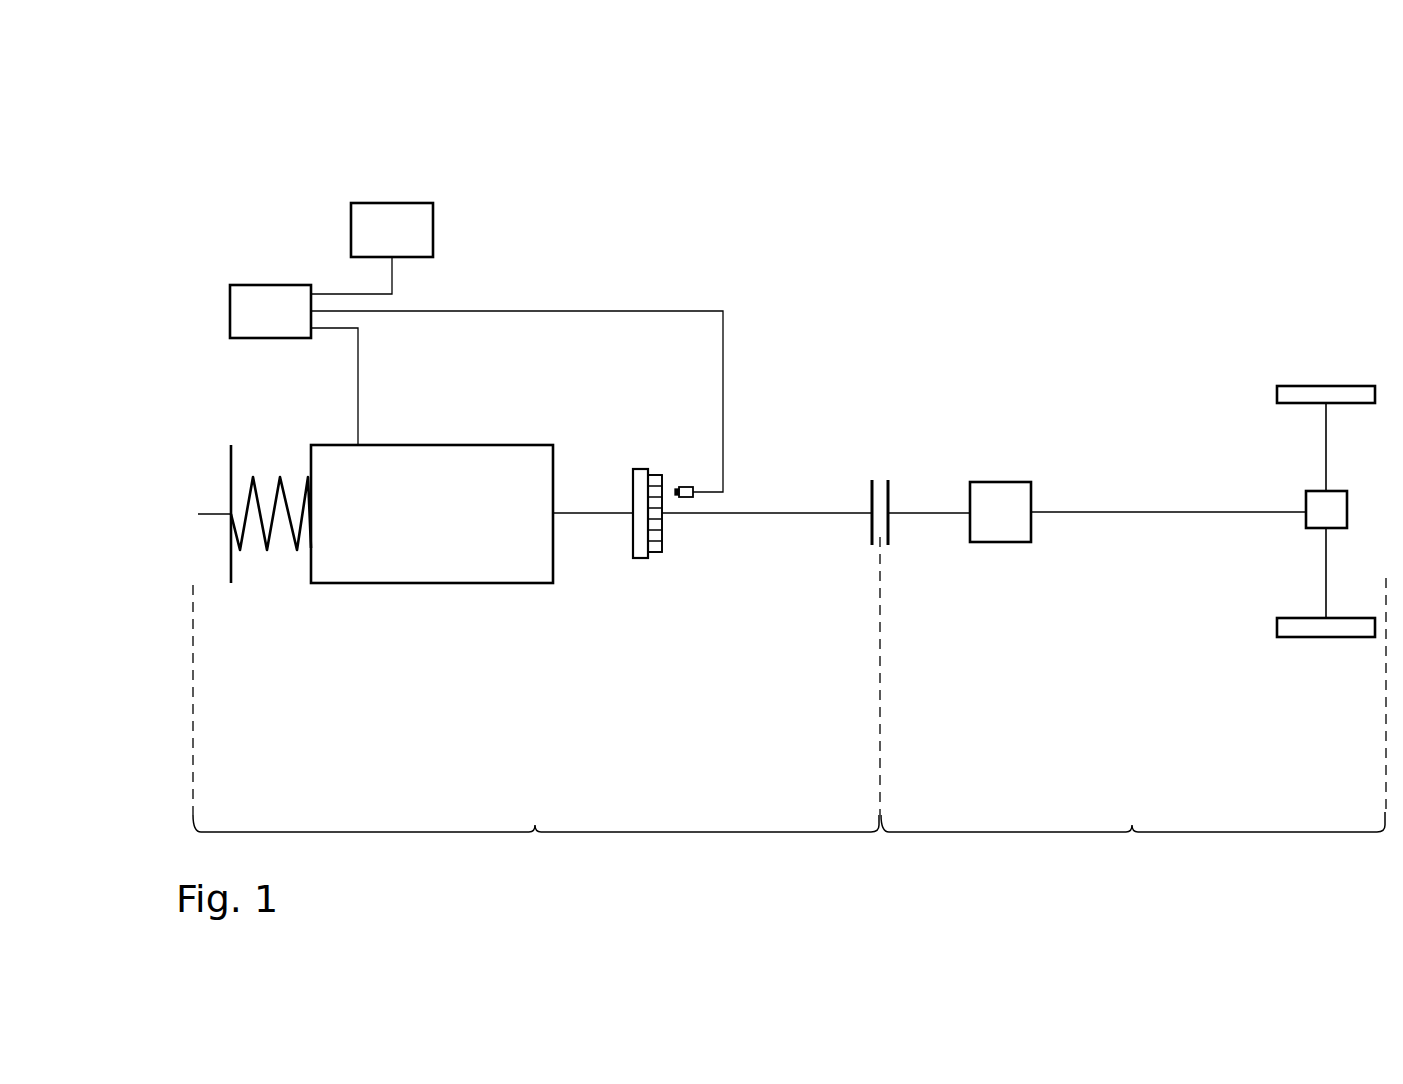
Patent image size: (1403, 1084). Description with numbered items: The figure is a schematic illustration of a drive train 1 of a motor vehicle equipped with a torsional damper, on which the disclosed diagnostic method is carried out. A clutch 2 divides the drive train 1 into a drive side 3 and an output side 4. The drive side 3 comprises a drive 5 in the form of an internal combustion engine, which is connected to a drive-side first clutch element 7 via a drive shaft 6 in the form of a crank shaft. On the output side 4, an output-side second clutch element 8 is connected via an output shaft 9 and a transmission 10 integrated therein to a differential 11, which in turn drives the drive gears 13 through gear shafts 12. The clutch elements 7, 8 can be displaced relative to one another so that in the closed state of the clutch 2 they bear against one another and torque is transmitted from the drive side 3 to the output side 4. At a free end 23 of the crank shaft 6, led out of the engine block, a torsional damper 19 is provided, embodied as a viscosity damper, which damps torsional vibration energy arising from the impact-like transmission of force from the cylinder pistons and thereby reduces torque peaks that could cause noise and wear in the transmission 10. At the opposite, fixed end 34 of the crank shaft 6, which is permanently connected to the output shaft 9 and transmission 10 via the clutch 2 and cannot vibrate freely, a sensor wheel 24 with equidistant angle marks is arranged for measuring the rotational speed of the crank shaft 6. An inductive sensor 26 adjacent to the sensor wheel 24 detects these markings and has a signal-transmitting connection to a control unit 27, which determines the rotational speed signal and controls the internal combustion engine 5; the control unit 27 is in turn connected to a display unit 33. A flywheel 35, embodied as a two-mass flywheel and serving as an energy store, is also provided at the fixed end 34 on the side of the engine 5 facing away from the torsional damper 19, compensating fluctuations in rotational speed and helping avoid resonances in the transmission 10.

The drive train 1 is at (842, 158).
The clutch 2 is at (880, 473).
The drive side 3 is at (536, 841).
The output side 4 is at (1133, 839).
The drive 5 is at (426, 455).
The drive shaft 6 is at (593, 512).
The first clutch element 7 is at (867, 537).
The second clutch element 8 is at (892, 537).
The output shaft 9 is at (1102, 512).
The transmission 10 is at (997, 488).
The differential 11 is at (1310, 500).
The gear shafts 12 is at (1326, 435).
The drive gears 13 is at (1280, 393).
The torsional damper 19 is at (280, 570).
The free end 23 is at (213, 502).
The sensor wheel 24 is at (657, 560).
The sensor 26 is at (683, 487).
The control unit 27 is at (269, 292).
The display unit 33 is at (390, 208).
The end 34 is at (600, 532).
The flywheel 35 is at (641, 567).